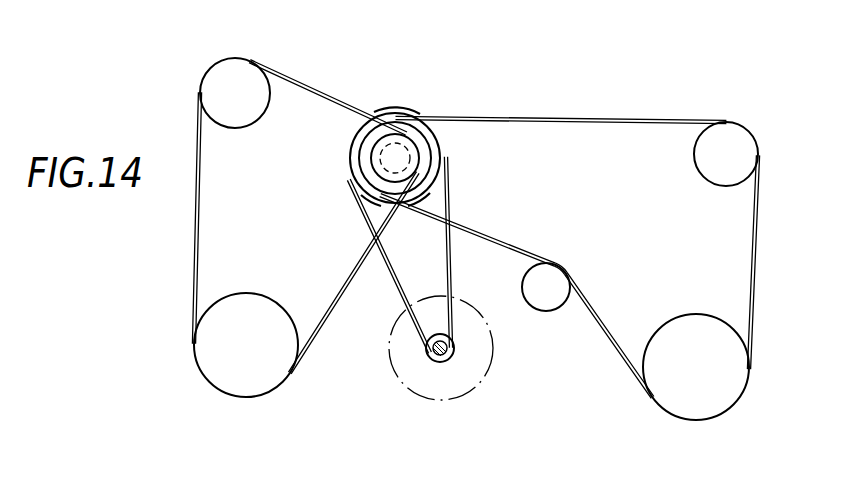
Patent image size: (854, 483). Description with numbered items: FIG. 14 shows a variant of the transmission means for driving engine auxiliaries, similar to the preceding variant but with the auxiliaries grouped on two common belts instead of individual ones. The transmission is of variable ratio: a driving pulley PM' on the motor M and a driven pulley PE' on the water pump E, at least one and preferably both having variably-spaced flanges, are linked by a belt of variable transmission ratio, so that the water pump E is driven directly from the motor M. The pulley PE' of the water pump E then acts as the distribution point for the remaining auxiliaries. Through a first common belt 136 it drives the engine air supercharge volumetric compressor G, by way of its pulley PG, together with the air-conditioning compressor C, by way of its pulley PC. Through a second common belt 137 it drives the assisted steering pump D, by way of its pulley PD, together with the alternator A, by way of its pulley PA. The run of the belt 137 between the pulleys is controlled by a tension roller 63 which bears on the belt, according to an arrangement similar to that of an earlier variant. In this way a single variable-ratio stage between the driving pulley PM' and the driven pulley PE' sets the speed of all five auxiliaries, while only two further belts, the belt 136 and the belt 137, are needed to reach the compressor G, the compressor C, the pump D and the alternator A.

The engine air supercharge volumetric compressor G is at (235, 91).
The pulley of the volumetric compressor PG is at (242, 114).
The common belt 136 is at (299, 80).
The water pump E is at (398, 130).
The driven pulley PE' is at (398, 138).
The common belt 137 is at (573, 121).
The alternator A is at (697, 126).
The pulley of the alternator PA is at (705, 152).
The tension roller 63 is at (546, 303).
The assisted steering pump D is at (681, 350).
The pulley of the assisted steering pump PD is at (675, 326).
The air-conditioning compressor C is at (229, 337).
The pulley of the air-conditioning compressor PC is at (248, 302).
The motor M is at (455, 351).
The driving pulley PM' is at (431, 351).